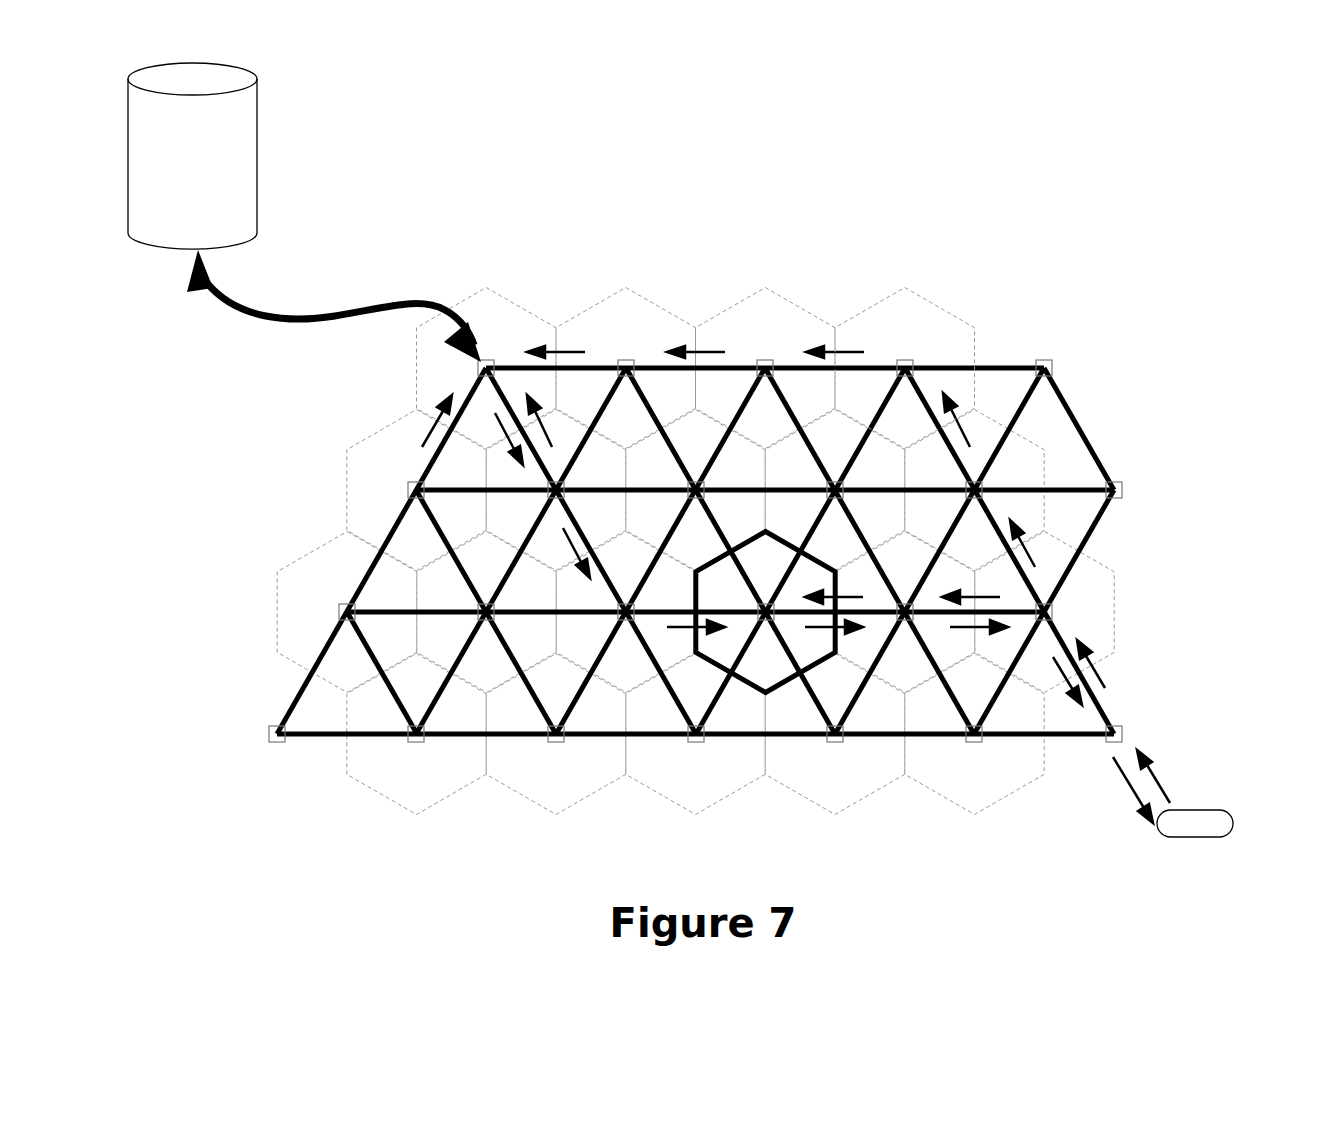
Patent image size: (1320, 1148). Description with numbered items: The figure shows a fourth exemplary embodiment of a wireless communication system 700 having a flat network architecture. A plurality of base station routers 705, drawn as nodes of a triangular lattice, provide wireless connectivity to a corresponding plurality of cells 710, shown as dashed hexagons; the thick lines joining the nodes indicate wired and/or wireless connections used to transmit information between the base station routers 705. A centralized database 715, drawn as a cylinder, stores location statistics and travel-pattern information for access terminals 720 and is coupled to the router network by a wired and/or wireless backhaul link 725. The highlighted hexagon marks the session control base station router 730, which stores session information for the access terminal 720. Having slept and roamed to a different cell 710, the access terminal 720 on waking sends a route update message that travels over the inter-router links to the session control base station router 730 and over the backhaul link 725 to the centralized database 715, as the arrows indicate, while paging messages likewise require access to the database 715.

The wireless communication system 700 is at (1064, 129).
The base station router 705 is at (1044, 357).
The cell 710 is at (932, 306).
The centralized database 715 is at (192, 156).
The access terminal 720 is at (1210, 810).
The backhaul link 725 is at (246, 316).
The session control base station router 730 is at (748, 687).